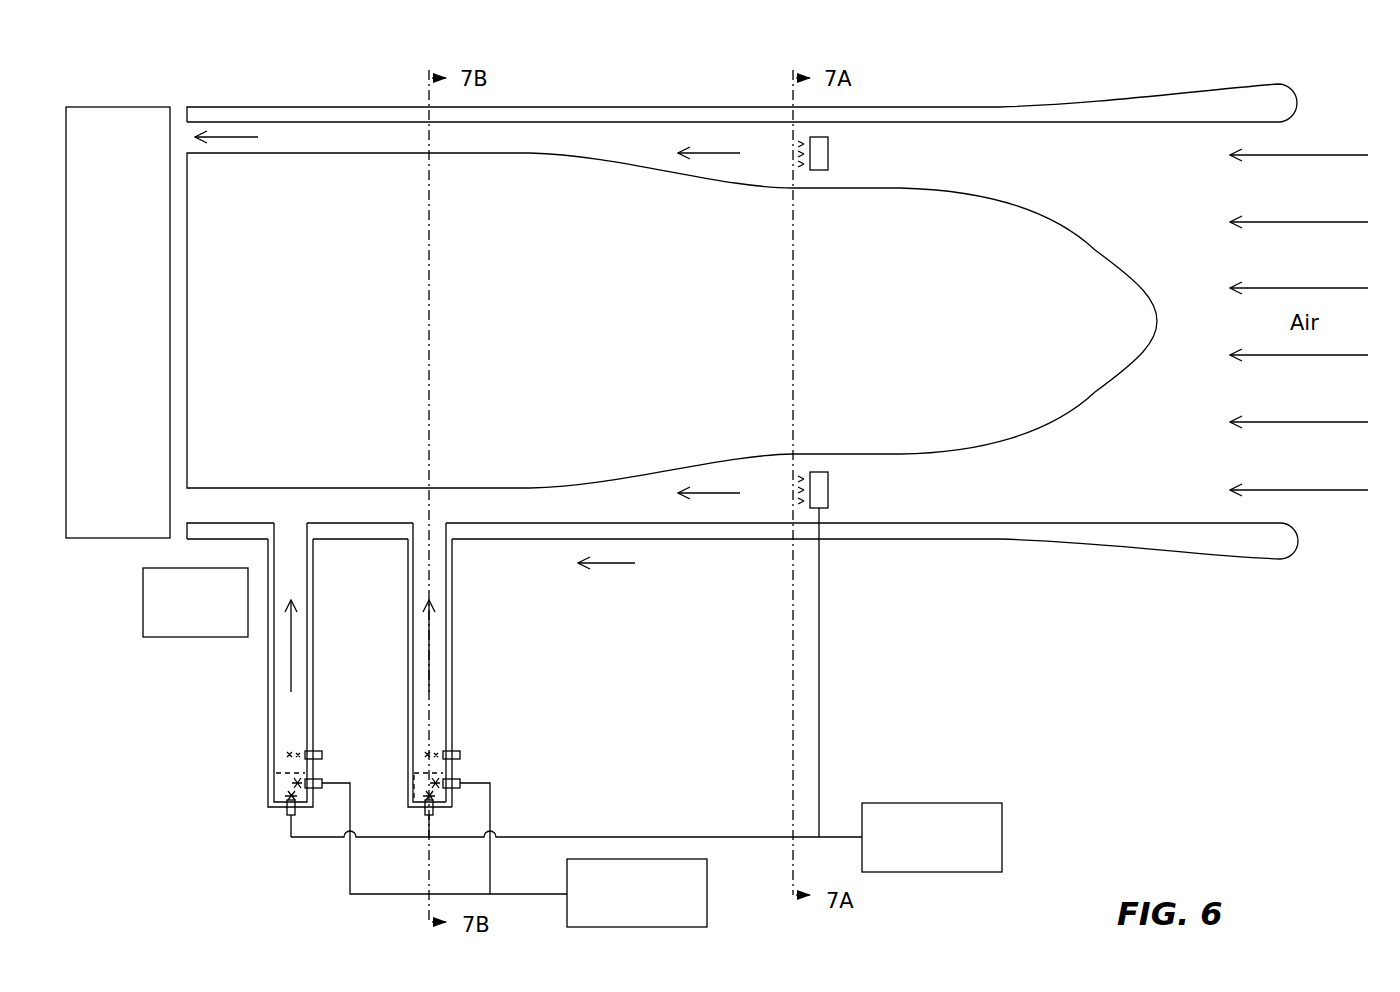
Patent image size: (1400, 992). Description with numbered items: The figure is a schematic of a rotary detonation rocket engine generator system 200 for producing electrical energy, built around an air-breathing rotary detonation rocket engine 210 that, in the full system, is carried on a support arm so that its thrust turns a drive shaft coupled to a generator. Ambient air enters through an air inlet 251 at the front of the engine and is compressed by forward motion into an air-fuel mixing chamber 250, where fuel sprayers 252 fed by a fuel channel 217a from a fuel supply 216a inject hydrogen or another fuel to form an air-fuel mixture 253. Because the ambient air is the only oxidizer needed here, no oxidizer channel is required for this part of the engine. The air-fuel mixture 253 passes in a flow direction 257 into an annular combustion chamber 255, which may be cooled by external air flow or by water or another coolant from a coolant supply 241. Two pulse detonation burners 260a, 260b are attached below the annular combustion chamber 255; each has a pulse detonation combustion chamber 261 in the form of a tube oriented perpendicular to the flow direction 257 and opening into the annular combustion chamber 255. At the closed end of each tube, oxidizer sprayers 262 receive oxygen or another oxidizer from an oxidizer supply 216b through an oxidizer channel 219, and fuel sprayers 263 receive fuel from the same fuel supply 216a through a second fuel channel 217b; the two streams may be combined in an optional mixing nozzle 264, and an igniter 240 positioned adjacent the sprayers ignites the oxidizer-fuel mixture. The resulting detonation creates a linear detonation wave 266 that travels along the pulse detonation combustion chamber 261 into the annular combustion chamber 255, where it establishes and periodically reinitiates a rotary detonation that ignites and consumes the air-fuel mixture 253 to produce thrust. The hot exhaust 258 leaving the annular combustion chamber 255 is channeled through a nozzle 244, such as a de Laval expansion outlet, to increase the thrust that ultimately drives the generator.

The rotary detonation rocket engine generator system 200 is at (407, 48).
The rotary detonation rocket engine 210 is at (742, 79).
The air-fuel mixing chamber 250 is at (672, 121).
The annular combustion chamber 255 is at (313, 122).
The exhaust 258 is at (228, 136).
The fuel sprayers 252 is at (708, 151).
The air-fuel mixture 253 is at (770, 498).
The flow direction 257 is at (609, 568).
The air inlet 251 is at (1292, 511).
The nozzle 244 is at (137, 381).
The coolant supply 241 is at (142, 610).
The pulse detonation burner 260a is at (458, 680).
The pulse detonation burner 260b is at (238, 712).
The pulse detonation combustion chamber 261 is at (453, 620).
The detonation wave 266 is at (427, 640).
The igniter 240 is at (462, 752).
The mixing nozzle 264 is at (444, 768).
The oxidizer sprayers 262 is at (462, 783).
The fuel sprayers 263 is at (423, 811).
The fuel channel 217a is at (821, 672).
The fuel channel 217b is at (622, 836).
The oxidizer channel 219 is at (519, 893).
The fuel supply 216a is at (1003, 838).
The oxidizer supply 216b is at (707, 905).